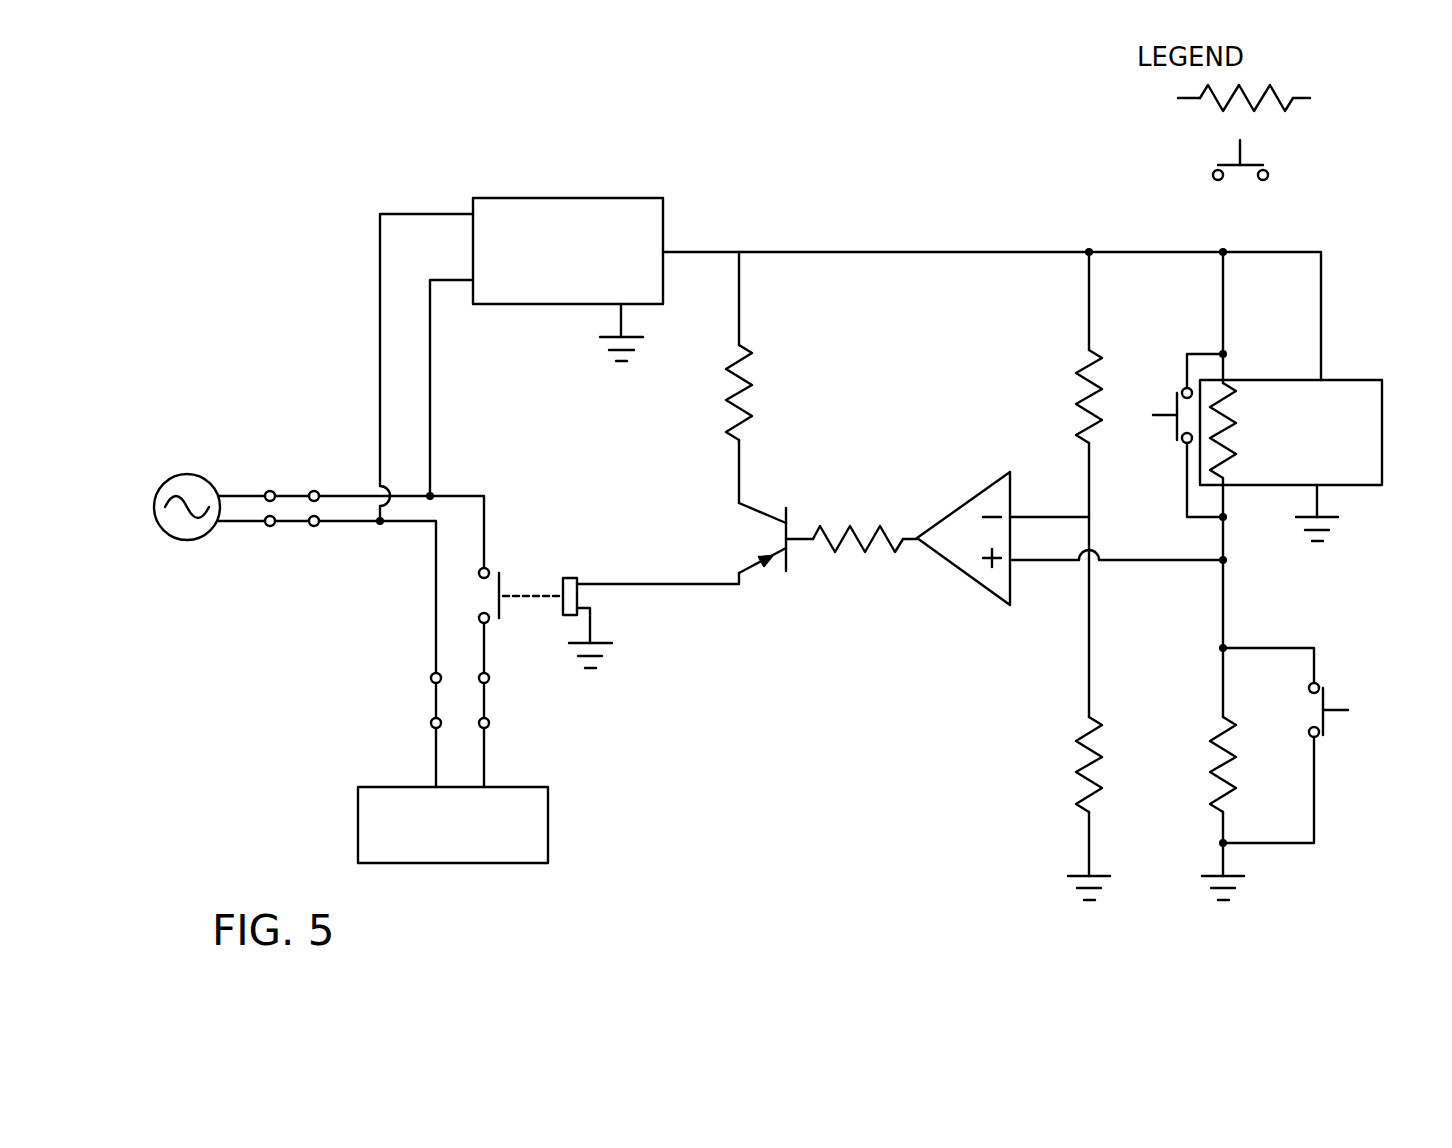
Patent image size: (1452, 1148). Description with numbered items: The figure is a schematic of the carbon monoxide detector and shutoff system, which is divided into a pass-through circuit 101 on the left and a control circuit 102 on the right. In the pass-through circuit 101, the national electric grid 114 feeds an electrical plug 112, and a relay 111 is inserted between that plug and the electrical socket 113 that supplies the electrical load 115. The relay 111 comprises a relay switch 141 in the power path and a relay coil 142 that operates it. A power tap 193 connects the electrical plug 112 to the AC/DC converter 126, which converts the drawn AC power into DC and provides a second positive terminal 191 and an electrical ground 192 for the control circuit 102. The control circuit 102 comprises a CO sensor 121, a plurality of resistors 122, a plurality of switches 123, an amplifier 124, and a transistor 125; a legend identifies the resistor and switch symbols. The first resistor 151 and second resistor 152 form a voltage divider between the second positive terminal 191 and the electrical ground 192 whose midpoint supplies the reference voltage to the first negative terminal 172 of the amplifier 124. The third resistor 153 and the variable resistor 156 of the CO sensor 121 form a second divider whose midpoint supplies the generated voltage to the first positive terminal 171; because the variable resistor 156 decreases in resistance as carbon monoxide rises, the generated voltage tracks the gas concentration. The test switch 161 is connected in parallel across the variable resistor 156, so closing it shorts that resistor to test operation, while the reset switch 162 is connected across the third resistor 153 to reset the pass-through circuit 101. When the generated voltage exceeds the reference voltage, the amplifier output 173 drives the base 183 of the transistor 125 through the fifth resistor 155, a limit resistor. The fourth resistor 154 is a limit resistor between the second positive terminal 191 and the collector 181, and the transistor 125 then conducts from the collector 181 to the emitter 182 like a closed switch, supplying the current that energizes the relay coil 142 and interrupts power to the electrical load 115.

The pass-through circuit 101 is at (258, 645).
The control circuit 102 is at (870, 222).
The relay 111 is at (514, 578).
The NEMA 5-15P electrical plug 112 is at (312, 519).
The NEMA 5-15 electrical socket 113 is at (431, 678).
The national electric grid 114 is at (182, 476).
The electrical load 115 is at (550, 822).
The CO sensor 121 is at (1356, 378).
The plurality of resistors 122 is at (1325, 97).
The plurality of switches 123 is at (1300, 163).
The amplifier 124 is at (978, 492).
The transistor 125 is at (773, 570).
The AC/DC converter 126 is at (615, 198).
The relay switch 141 is at (489, 595).
The relay coil 142 is at (570, 578).
The first resistor 151 is at (1078, 366).
The second resistor 152 is at (1077, 755).
The third resistor 153 is at (1212, 790).
The fourth resistor 154 is at (752, 378).
The fifth resistor 155 is at (850, 552).
The variable resistor 156 is at (1222, 465).
The test switch 161 is at (1160, 410).
The reset switch 162 is at (1338, 705).
The first positive terminal 171 is at (1015, 565).
The first negative terminal 172 is at (1015, 510).
The amplifier output 173 is at (917, 537).
The collector 181 is at (742, 503).
The emitter 182 is at (739, 573).
The base 183 is at (800, 530).
The second positive terminal 191 is at (688, 252).
The electrical ground 192 is at (625, 358).
The power tap 193 is at (425, 213).